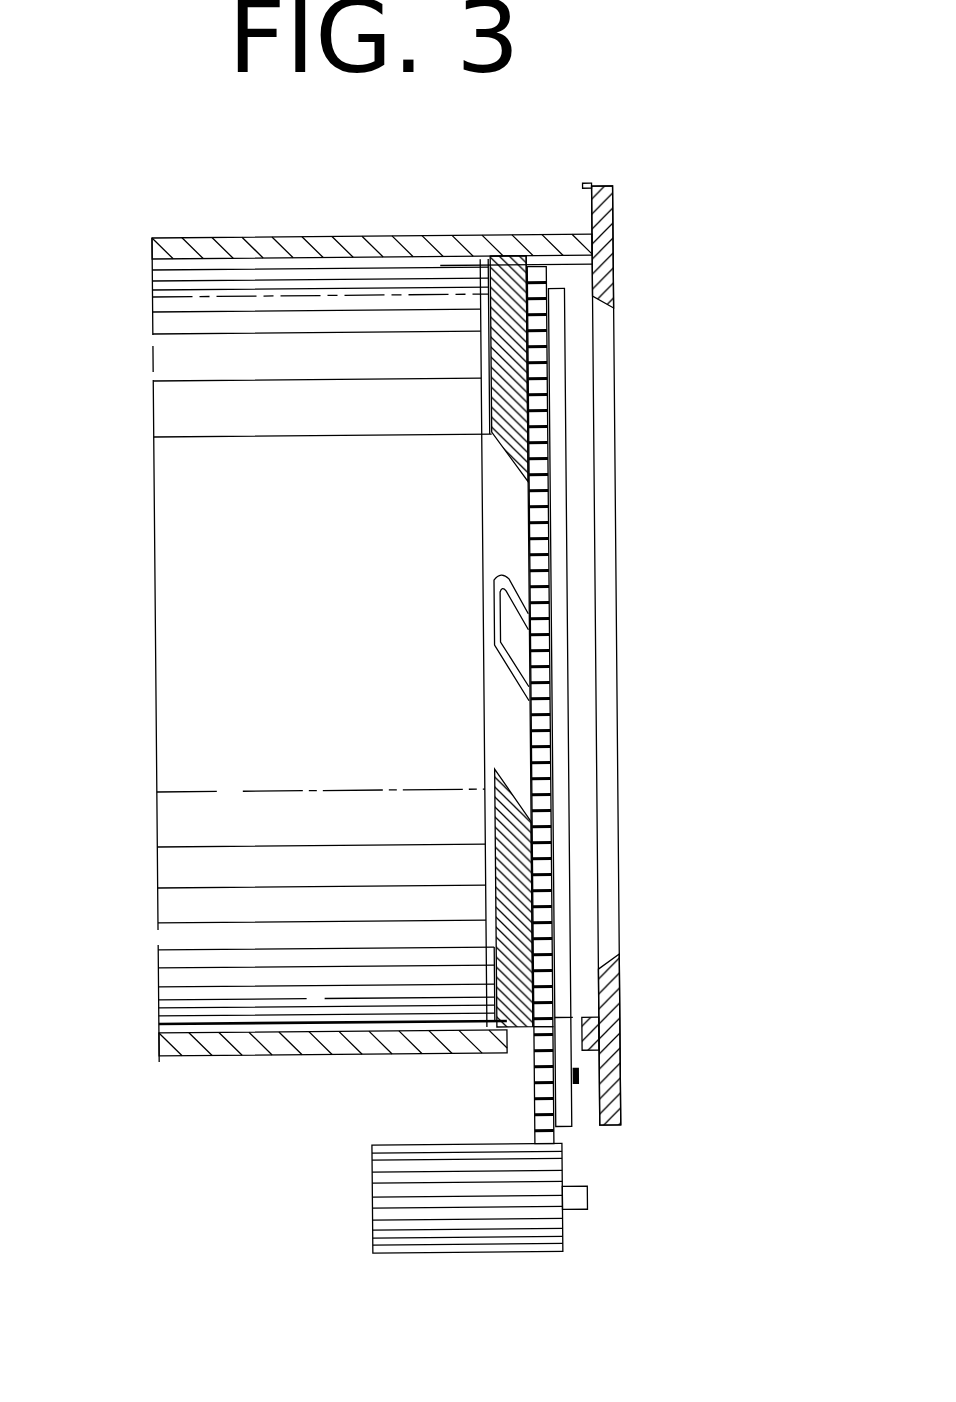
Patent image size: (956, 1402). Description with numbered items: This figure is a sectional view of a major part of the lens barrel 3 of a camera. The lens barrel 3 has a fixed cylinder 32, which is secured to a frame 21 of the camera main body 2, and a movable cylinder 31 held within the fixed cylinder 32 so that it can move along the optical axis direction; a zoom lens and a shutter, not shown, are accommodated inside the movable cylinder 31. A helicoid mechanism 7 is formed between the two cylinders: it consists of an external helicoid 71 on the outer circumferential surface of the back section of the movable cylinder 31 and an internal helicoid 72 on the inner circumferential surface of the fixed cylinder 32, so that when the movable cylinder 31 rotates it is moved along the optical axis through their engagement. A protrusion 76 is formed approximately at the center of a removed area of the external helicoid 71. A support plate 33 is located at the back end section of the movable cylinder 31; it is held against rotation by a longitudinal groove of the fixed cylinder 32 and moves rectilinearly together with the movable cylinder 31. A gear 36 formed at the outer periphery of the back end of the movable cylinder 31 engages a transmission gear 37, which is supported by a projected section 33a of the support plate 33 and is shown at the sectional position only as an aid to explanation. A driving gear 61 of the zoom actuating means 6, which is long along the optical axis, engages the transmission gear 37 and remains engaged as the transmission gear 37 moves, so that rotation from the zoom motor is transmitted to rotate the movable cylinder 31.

The camera main body 2 is at (647, 613).
The frame 21 is at (613, 264).
The lens barrel 3 is at (180, 234).
The movable cylinder 31 is at (163, 305).
The fixed cylinder 32 is at (242, 240).
The support plate 33 is at (565, 470).
The projected section 33a is at (563, 1104).
The gear 36 is at (540, 793).
The transmission gear 37 is at (530, 1088).
The zoom actuating means 6 is at (416, 1227).
The driving gear 61 is at (482, 1250).
The helicoid mechanism 7 is at (551, 586).
The external helicoid 71 is at (510, 380).
The internal helicoid 72 is at (345, 266).
The protrusion 76 is at (508, 634).